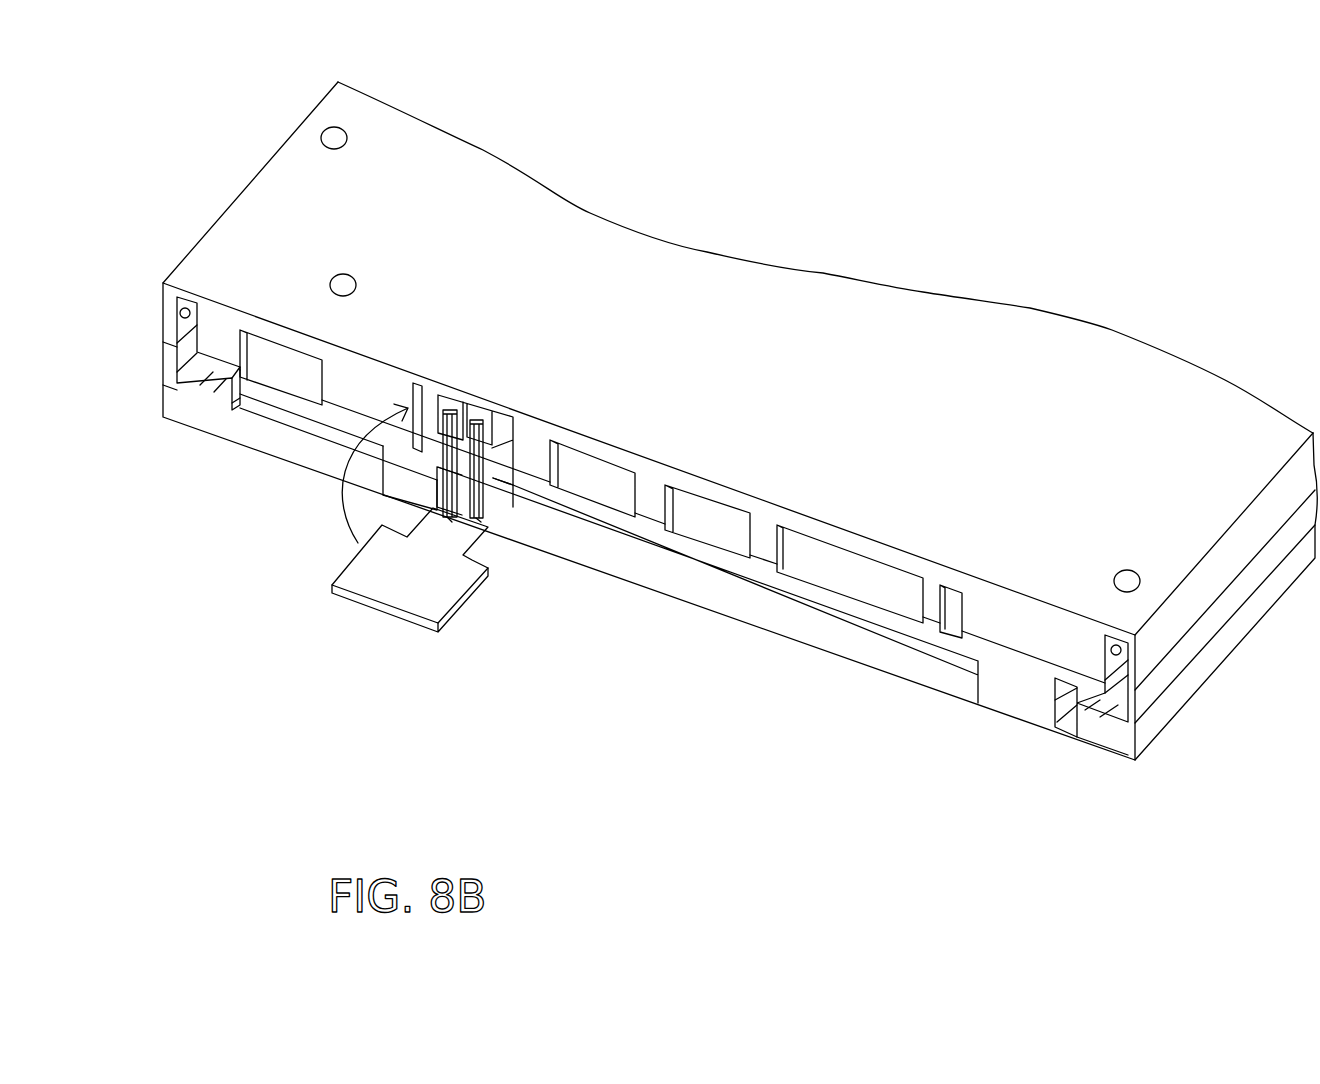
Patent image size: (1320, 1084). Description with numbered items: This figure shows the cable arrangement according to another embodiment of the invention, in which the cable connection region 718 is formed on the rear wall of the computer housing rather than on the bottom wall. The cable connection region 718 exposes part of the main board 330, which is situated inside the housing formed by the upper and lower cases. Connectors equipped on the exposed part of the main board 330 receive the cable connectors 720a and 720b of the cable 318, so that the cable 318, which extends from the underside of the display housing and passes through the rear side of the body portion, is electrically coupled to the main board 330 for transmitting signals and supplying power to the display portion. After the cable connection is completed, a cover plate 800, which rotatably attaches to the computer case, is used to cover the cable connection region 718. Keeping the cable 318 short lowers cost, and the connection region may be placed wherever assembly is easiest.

The cable connection region 718 is at (530, 440).
The cable connector 720a is at (477, 412).
The cable connector 720b is at (456, 402).
The cable 318 is at (452, 512).
The main board 330 is at (513, 507).
The cover plate 800 is at (387, 588).